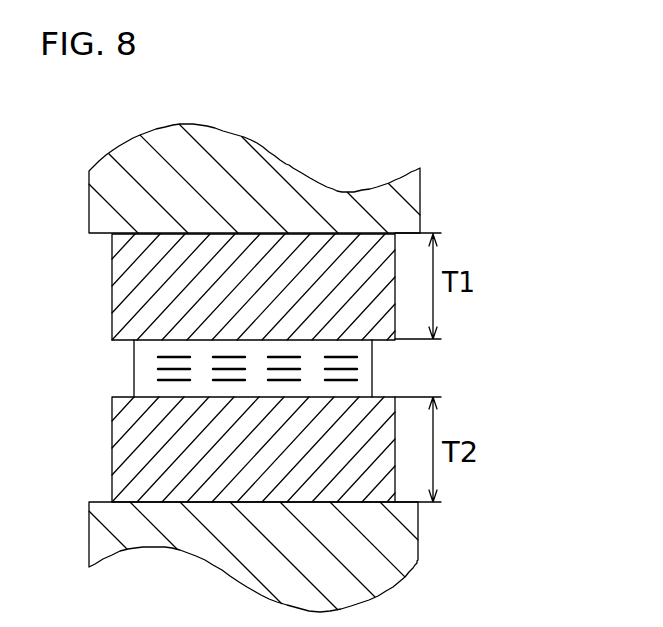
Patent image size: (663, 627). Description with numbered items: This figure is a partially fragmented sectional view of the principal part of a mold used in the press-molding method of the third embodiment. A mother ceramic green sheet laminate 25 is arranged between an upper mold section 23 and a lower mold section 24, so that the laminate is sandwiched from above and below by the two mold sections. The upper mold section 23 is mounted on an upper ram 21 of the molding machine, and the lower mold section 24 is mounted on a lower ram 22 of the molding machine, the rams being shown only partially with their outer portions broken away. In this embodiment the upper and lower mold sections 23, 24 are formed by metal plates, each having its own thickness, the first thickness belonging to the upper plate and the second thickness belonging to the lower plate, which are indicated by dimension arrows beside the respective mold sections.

The upper ram 21 is at (332, 203).
The lower ram 22 is at (365, 570).
The upper mold section 23 is at (365, 234).
The lower mold section 24 is at (338, 485).
The mother ceramic green sheet laminate 25 is at (360, 350).